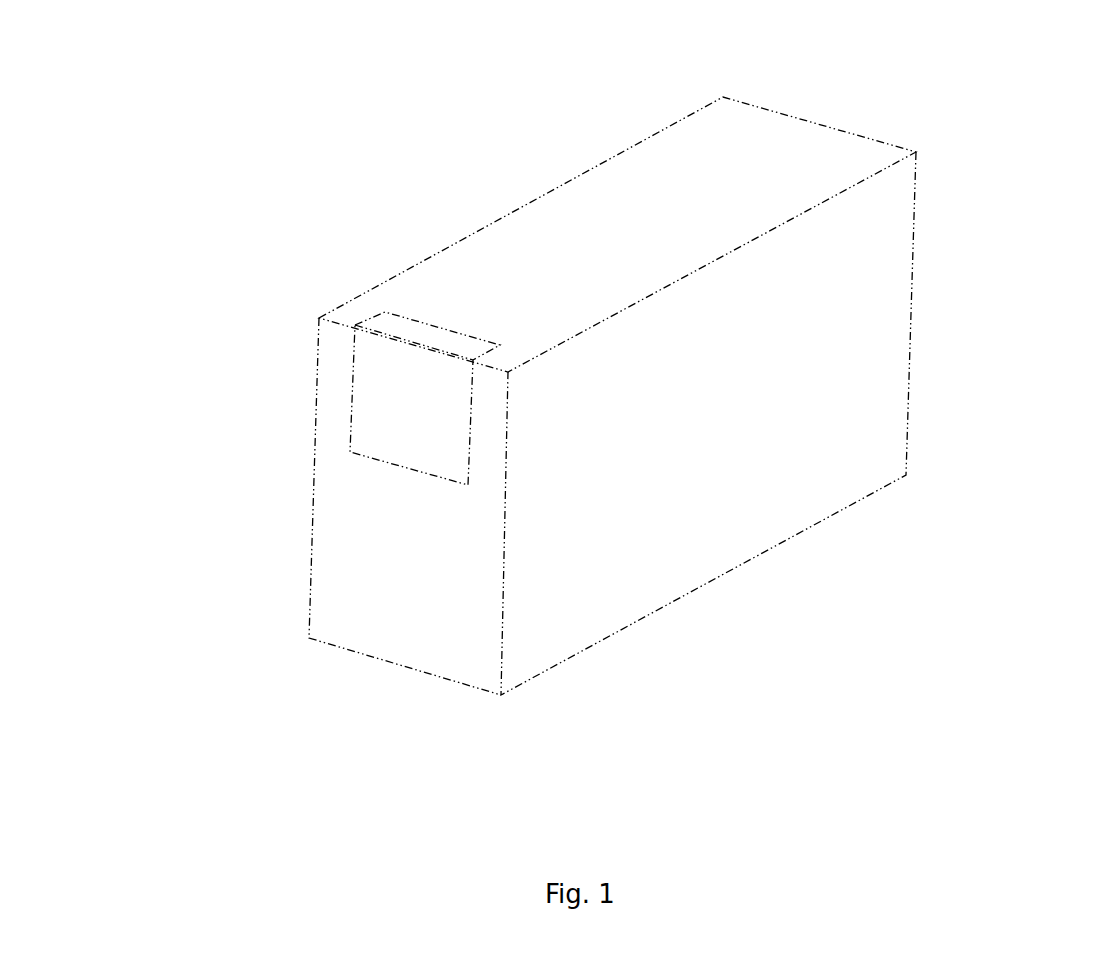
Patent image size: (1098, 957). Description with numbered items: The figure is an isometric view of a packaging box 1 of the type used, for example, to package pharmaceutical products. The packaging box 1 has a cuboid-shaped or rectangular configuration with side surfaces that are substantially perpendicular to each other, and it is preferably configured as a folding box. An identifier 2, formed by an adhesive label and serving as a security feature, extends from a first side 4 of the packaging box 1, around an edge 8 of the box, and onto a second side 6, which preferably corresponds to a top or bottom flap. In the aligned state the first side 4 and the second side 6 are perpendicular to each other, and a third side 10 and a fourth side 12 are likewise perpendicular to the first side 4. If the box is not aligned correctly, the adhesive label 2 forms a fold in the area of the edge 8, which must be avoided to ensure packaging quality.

The packaging box 1 is at (989, 86).
The identifier 2 is at (375, 398).
The first side 4 is at (577, 233).
The second side 6 is at (362, 555).
The edge 8 is at (345, 323).
The third side 10 is at (445, 247).
The fourth side 12 is at (730, 500).